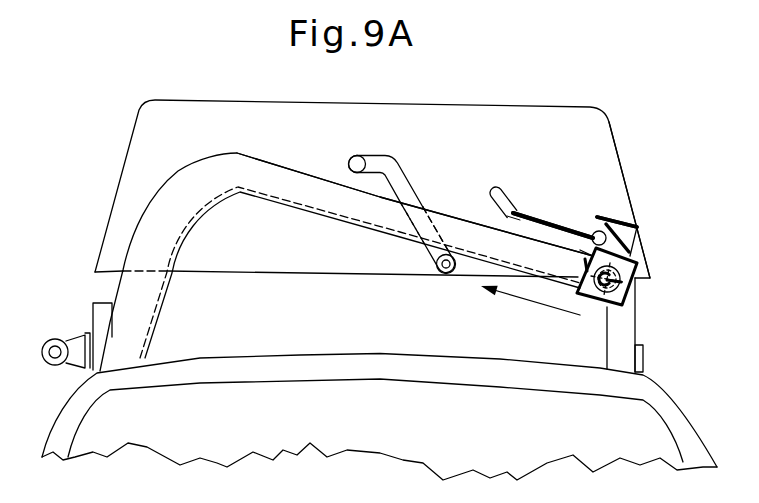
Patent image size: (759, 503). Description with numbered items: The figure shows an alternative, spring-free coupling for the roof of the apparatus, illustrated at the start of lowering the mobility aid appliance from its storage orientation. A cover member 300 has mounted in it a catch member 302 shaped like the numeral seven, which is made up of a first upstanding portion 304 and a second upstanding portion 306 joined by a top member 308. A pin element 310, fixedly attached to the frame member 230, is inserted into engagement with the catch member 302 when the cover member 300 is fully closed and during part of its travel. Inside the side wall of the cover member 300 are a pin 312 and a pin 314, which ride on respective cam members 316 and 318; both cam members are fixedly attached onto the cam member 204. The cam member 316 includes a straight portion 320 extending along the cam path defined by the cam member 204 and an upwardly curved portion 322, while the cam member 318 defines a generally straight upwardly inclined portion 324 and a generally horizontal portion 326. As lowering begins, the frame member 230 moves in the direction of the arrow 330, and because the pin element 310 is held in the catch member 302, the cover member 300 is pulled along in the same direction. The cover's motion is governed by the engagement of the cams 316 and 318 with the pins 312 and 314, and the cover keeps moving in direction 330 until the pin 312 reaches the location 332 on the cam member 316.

The cover member 300 is at (333, 101).
The cam member 204 is at (352, 223).
The generally horizontal portion 326 is at (357, 157).
The cam member 318 is at (403, 178).
The straight upwardly inclined portion 324 is at (420, 202).
The upwardly curved portion 322 is at (496, 186).
The cam member 316 is at (554, 216).
The straight portion 320 is at (534, 222).
The location on cam 332 is at (516, 222).
The pin 314 is at (441, 273).
The pin 312 is at (593, 276).
The catch member 302 is at (610, 218).
The first upstanding portion 304 is at (587, 240).
The top member 308 is at (632, 223).
The second upstanding portion 306 is at (634, 256).
The pin element 310 is at (646, 272).
The frame member 230 is at (634, 300).
The arrow 330 is at (562, 308).